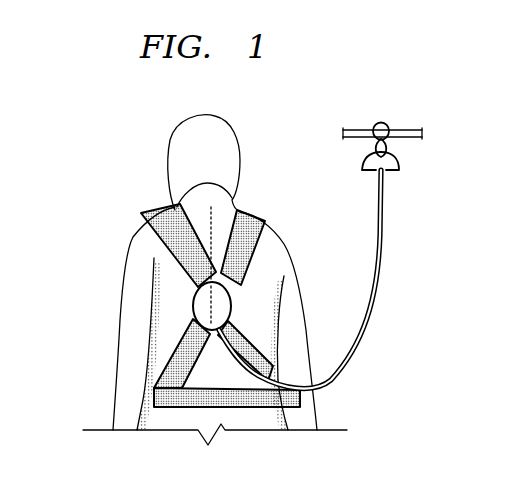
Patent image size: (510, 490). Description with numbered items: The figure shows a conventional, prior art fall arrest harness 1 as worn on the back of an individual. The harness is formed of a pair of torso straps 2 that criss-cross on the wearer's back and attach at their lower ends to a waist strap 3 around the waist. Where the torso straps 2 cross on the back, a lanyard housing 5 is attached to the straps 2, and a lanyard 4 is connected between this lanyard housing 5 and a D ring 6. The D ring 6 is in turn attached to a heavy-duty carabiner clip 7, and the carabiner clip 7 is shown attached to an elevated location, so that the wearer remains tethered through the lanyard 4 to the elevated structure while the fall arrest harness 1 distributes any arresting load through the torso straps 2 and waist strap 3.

The fall arrest harness 1 is at (103, 131).
The torso straps 2 is at (157, 213).
The waist strap 3 is at (195, 405).
The lanyard 4 is at (372, 270).
The lanyard housing 5 is at (195, 305).
The D ring 6 is at (396, 170).
The carabiner clip 7 is at (376, 122).